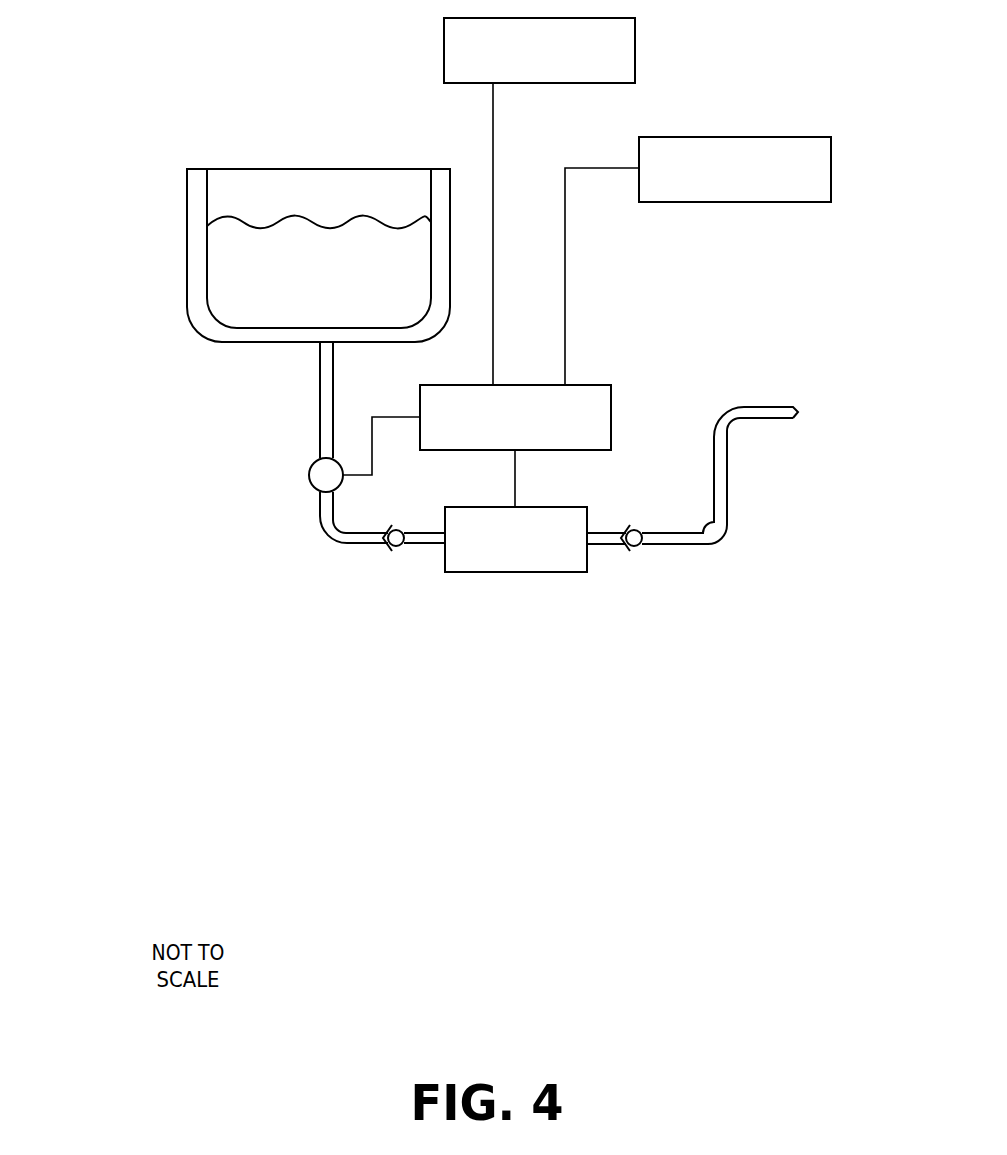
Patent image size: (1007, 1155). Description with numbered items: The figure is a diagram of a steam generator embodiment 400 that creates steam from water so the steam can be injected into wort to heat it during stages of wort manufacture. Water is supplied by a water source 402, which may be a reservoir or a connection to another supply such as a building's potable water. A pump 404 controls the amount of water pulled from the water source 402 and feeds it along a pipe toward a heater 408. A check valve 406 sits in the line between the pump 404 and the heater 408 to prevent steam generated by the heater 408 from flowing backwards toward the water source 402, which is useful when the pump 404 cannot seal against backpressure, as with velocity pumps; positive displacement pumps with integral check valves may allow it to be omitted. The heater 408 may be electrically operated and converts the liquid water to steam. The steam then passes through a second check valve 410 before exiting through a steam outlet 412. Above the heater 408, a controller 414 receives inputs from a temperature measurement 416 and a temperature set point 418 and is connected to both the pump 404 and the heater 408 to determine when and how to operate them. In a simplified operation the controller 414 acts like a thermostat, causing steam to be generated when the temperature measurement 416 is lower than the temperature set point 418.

The steam generator 400 is at (686, 752).
The water source 402 is at (178, 238).
The pump 404 is at (303, 474).
The check valve 406 is at (397, 547).
The heater 408 is at (560, 572).
The second check valve 410 is at (638, 546).
The steam outlet 412 is at (800, 412).
The controller 414 is at (611, 406).
The temperature measurement 416 is at (635, 42).
The temperature set point 418 is at (815, 137).